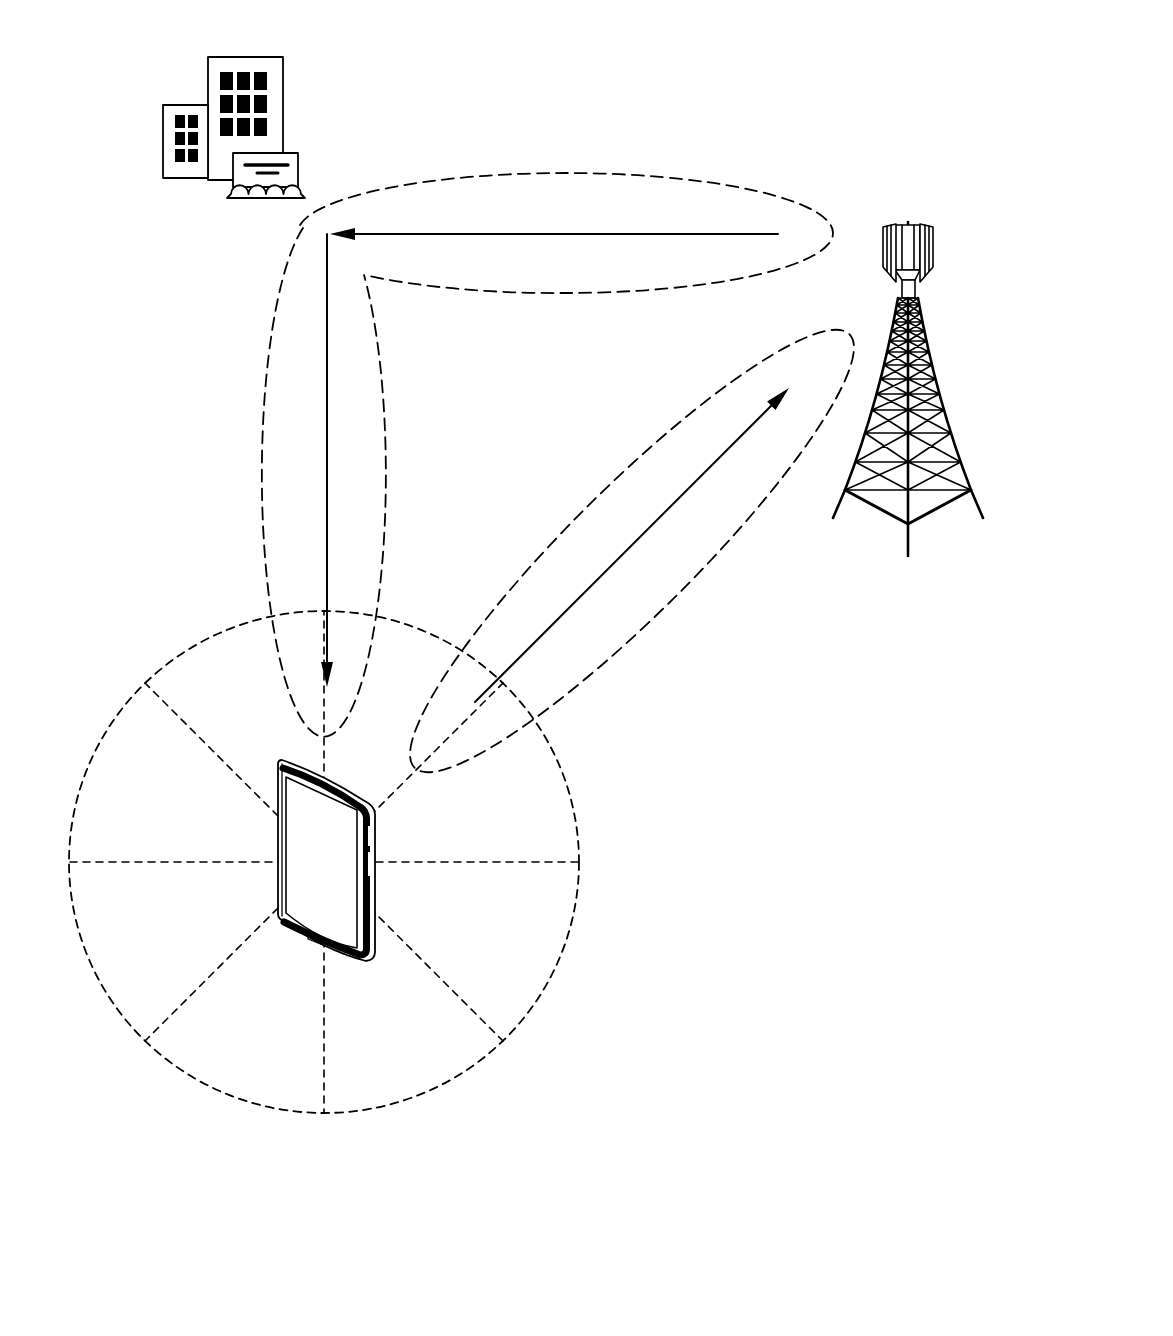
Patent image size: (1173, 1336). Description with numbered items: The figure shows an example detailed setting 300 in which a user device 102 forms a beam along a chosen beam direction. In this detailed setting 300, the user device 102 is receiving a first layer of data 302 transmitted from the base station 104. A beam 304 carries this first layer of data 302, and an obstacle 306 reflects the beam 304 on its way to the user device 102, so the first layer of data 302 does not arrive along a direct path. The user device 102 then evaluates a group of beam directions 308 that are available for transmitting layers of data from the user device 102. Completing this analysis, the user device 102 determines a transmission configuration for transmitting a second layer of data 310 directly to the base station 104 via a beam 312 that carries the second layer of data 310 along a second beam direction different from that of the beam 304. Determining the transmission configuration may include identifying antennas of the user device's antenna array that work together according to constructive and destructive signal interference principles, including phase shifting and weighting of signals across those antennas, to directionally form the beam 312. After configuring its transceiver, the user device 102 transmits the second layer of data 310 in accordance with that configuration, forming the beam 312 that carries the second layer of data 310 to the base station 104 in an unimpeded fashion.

The detailed setting 300 is at (835, 50).
The user device 102 is at (307, 940).
The base station 104 is at (875, 510).
The first layer of data 302 is at (327, 545).
The beam 304 is at (265, 414).
The obstacle 306 is at (285, 107).
The group of beam directions 308 is at (535, 1006).
The second layer of data 310 is at (566, 607).
The beam 312 is at (552, 701).